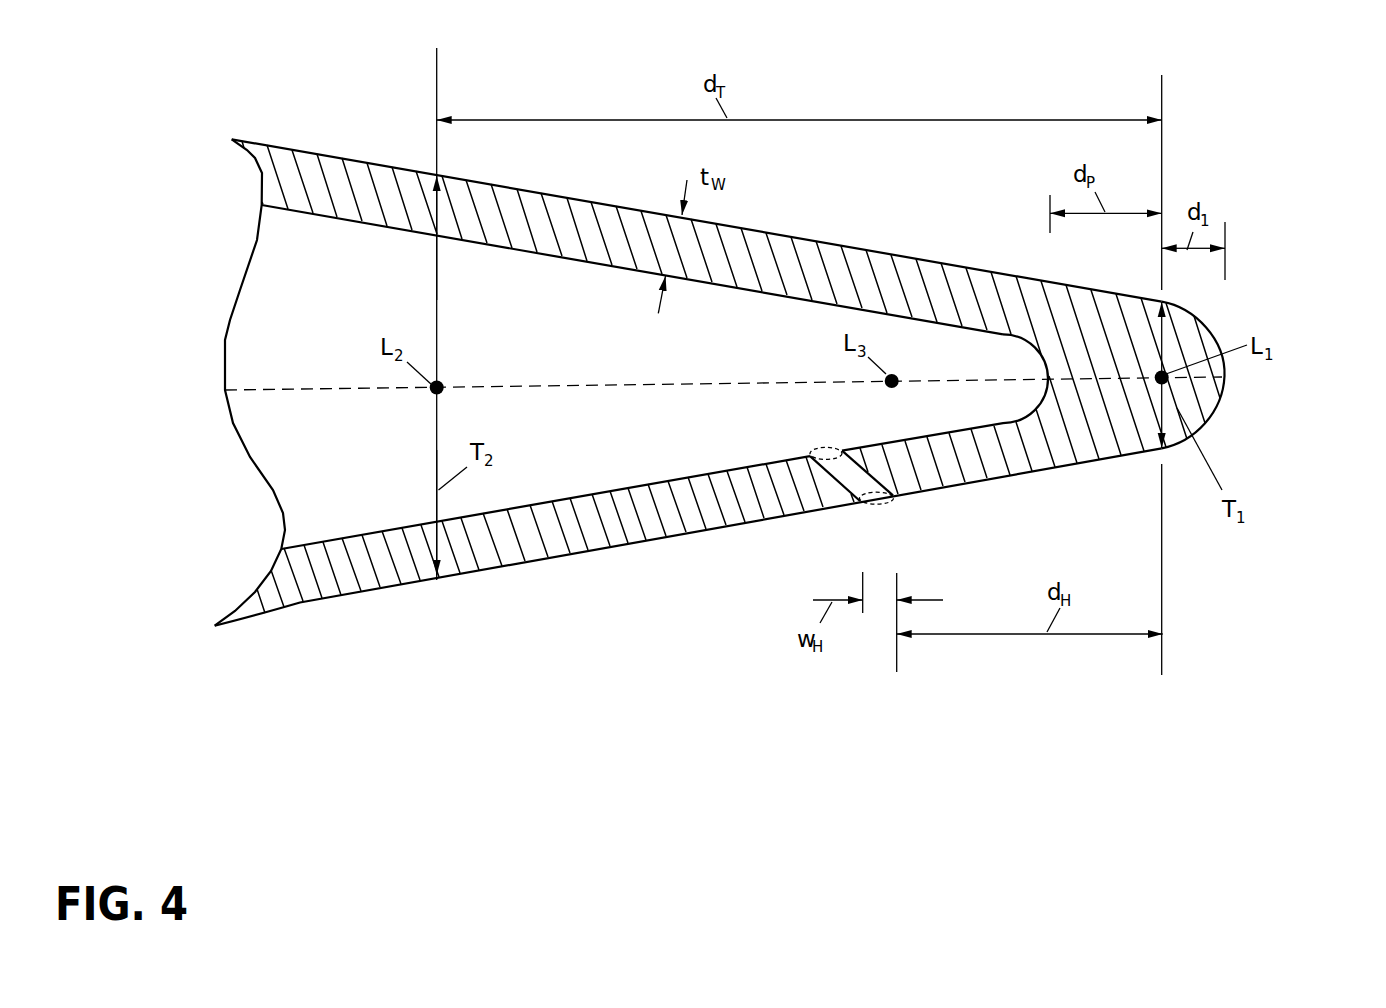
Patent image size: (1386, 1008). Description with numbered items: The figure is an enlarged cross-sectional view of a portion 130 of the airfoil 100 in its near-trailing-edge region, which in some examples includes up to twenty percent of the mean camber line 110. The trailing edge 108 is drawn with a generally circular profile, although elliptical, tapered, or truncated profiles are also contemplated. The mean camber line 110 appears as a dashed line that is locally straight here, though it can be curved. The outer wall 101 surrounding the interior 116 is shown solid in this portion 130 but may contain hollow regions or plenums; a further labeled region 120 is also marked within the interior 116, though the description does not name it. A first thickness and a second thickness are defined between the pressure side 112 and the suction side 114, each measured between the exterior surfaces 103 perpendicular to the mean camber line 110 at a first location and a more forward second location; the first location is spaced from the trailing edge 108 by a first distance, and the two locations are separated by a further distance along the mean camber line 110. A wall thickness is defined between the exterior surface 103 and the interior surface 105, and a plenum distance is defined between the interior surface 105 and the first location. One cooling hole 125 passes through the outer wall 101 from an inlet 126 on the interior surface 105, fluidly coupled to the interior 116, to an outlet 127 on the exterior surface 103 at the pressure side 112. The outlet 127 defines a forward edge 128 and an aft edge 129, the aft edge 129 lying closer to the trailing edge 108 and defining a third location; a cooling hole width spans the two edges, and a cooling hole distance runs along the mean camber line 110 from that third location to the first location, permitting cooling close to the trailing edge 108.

The airfoil 100 is at (755, 353).
The outer wall 101 is at (343, 168).
The exterior surface 103 is at (277, 142).
The interior surface 105 is at (282, 208).
The trailing edge 108 is at (1222, 378).
The mean camber line 110 is at (290, 389).
The pressure side 112 is at (612, 548).
The suction side 114 is at (833, 242).
The interior 116 is at (554, 322).
The proximal lumen region 120 is at (384, 308).
The cooling hole 125 is at (883, 477).
The inlet 126 is at (827, 447).
The outlet 127 is at (877, 505).
The forward edge 128 is at (860, 507).
The aft edge 129 is at (893, 497).
The portion 130 is at (1227, 70).